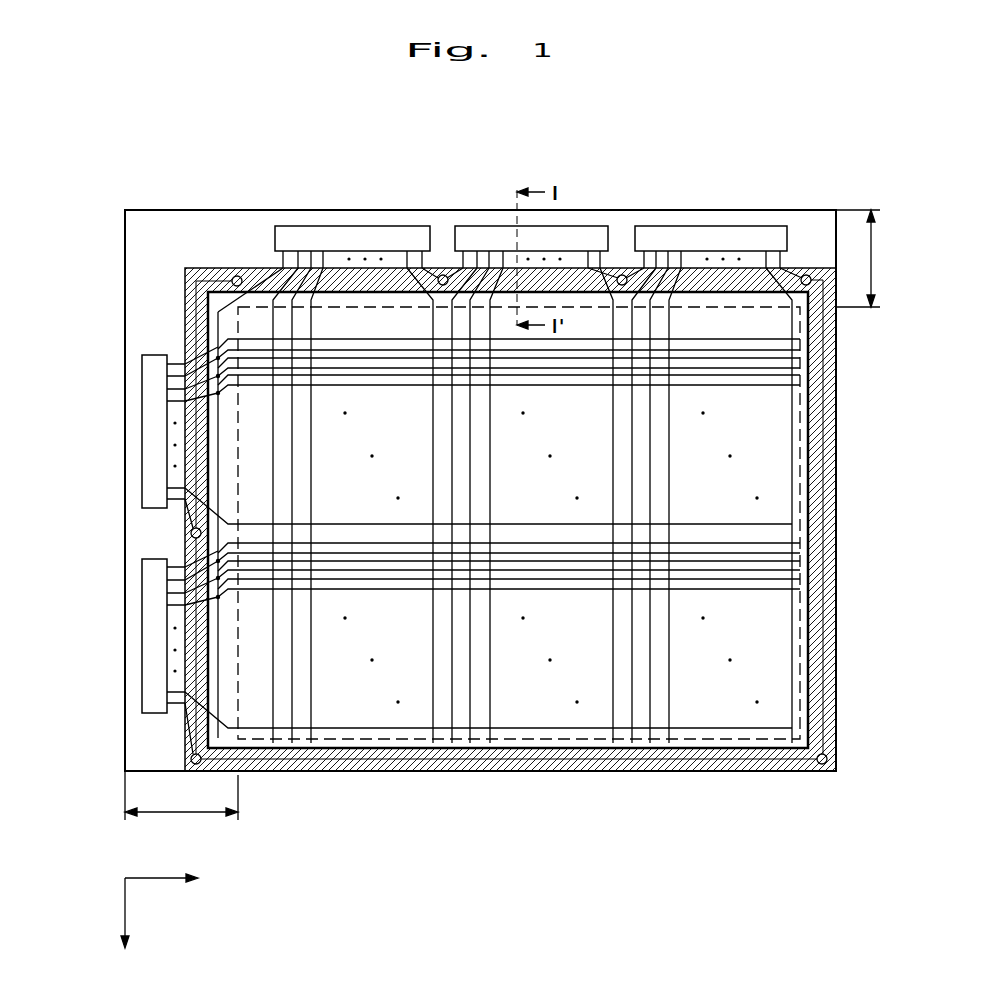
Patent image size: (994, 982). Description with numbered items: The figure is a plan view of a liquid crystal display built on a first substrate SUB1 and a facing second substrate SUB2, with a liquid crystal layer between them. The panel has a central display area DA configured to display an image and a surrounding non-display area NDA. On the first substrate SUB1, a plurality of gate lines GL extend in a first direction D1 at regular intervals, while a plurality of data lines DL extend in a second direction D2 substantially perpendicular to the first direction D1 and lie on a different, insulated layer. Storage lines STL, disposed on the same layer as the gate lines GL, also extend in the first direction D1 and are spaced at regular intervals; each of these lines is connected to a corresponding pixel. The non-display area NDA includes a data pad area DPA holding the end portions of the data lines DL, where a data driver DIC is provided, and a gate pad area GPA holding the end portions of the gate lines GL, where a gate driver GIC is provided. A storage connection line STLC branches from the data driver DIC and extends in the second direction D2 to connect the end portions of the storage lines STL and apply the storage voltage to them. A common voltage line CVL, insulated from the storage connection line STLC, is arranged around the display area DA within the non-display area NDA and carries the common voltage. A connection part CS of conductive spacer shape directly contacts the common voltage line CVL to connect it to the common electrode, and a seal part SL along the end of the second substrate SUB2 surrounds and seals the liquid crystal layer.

The first substrate SUB1 is at (125, 270).
The second substrate SUB2 is at (474, 519).
The non-display area NDA is at (834, 641).
The display area DA is at (800, 497).
The seal part SL is at (381, 771).
The common voltage line CVL is at (823, 570).
The connection part CS is at (441, 272).
The data driver DIC is at (320, 232).
The gate driver GIC is at (148, 397).
The data lines DL is at (311, 475).
The gate lines GL is at (357, 378).
The storage lines STL is at (402, 386).
The storage connection line STLC is at (217, 313).
The data pad area DPA is at (873, 258).
The gate pad area GPA is at (181, 806).
The first direction D1 is at (175, 879).
The second direction D2 is at (125, 926).